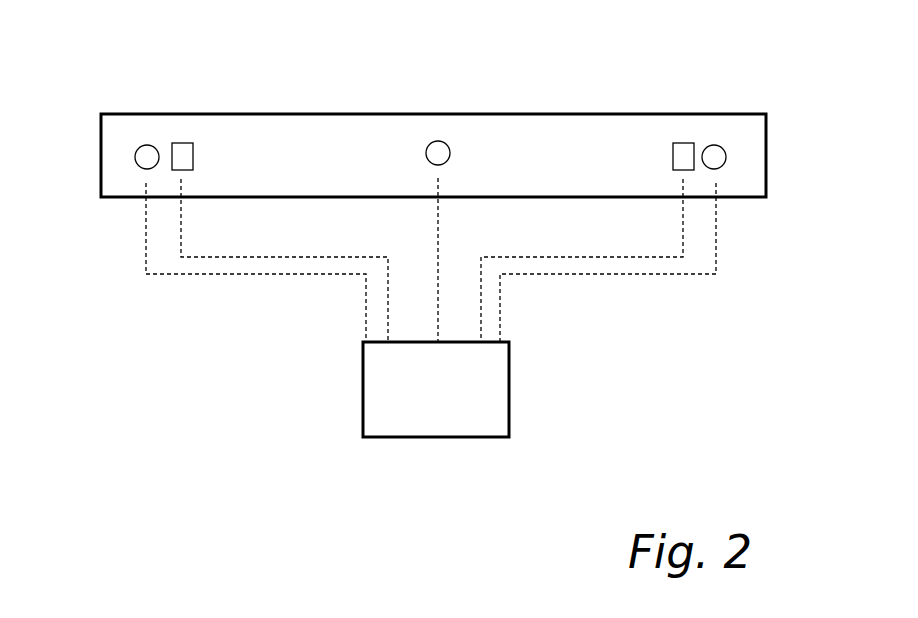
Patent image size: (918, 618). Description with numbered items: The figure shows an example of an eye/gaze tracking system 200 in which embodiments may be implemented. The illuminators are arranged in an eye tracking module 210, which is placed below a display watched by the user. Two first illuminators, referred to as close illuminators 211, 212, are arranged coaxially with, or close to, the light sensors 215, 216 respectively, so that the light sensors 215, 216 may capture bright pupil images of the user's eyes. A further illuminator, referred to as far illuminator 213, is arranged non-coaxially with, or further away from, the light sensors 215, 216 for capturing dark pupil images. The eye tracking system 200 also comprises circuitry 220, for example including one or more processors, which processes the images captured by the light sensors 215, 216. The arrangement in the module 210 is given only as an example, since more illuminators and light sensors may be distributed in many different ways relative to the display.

The eye/gaze tracking system 200 is at (153, 403).
The eye tracking module 210 is at (570, 113).
The close illuminator 211 is at (145, 155).
The close illuminator 212 is at (720, 152).
The far illuminator 213 is at (438, 150).
The light sensor 215 is at (183, 143).
The light sensor 216 is at (681, 143).
The circuitry 220 is at (377, 421).